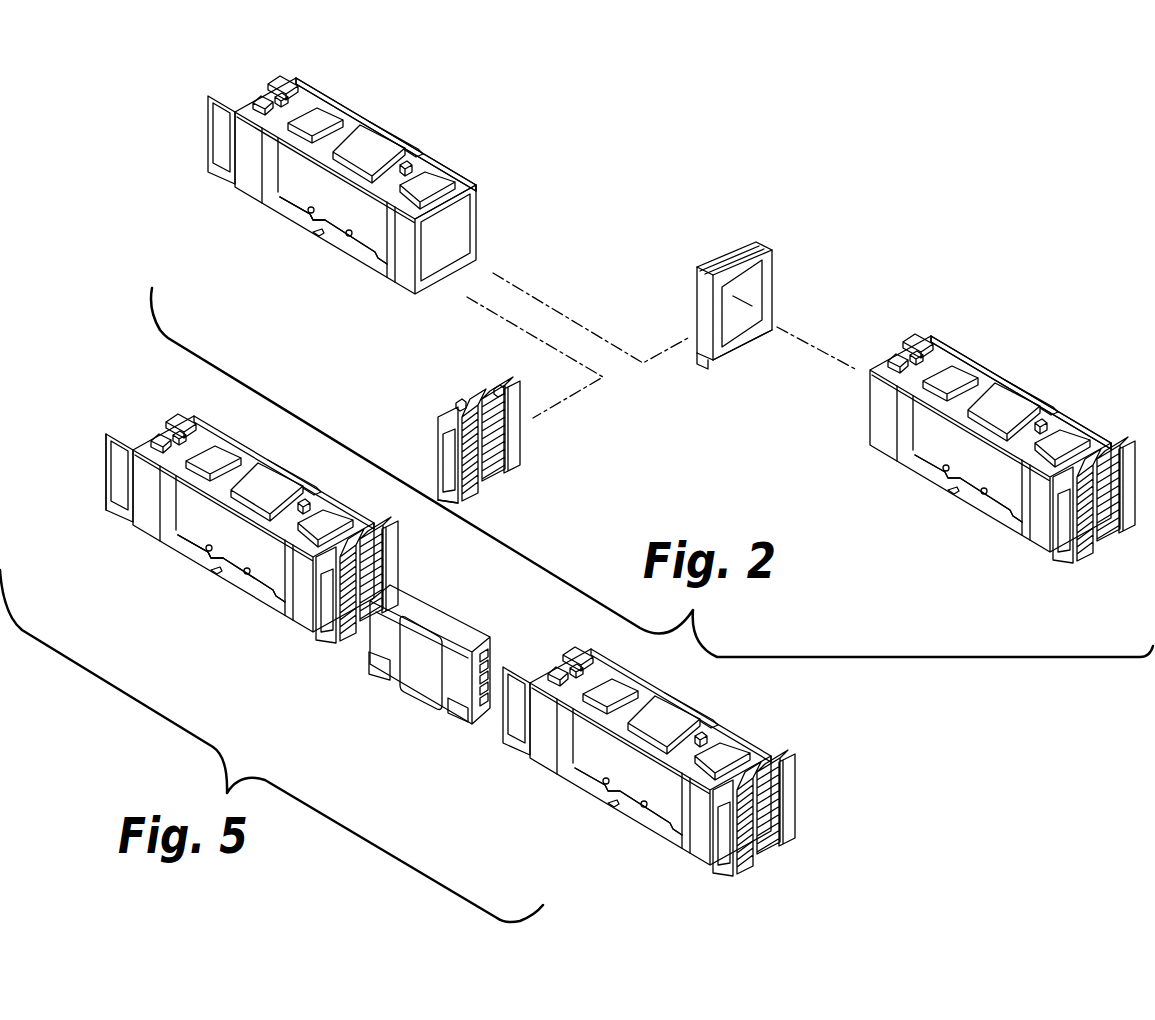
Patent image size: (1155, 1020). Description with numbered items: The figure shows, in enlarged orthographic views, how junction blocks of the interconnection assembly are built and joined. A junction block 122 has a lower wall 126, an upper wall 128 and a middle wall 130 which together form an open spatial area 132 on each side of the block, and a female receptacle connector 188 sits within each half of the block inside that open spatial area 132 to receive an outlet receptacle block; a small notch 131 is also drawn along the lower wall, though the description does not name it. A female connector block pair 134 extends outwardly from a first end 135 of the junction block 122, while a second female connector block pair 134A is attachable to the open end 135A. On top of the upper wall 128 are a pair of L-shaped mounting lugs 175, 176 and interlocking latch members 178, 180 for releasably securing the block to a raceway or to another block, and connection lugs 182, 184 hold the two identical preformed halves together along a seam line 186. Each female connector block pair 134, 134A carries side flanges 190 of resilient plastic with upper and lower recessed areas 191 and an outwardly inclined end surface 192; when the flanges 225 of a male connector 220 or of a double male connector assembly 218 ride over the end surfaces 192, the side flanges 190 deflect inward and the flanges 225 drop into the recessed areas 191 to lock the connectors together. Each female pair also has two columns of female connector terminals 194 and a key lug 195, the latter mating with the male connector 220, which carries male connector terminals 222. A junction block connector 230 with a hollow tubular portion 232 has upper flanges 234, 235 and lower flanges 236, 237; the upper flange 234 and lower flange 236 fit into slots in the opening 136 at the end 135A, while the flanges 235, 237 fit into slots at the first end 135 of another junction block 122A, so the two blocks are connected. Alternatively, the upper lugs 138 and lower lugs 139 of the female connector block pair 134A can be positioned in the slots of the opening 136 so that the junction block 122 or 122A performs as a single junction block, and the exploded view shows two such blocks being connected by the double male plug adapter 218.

In FIG. 2, the junction block 122 is at (332, 173).
In FIG. 5, the junction block 122 is at (205, 575).
In FIG. 2, the junction block 122A is at (987, 443).
In FIG. 5, the junction block 122A is at (645, 756).
In FIG. 2, the lower wall 126 is at (292, 229).
In FIG. 5, the lower wall 126 is at (188, 571).
In FIG. 2, the upper wall 128 is at (242, 181).
In FIG. 5, the upper wall 128 is at (146, 519).
In FIG. 2, the middle wall 130 is at (329, 211).
In FIG. 5, the middle wall 130 is at (228, 549).
In FIG. 2, the notch 131 is at (295, 268).
In FIG. 5, the notch 131 is at (208, 602).
In FIG. 2, the open spatial area 132 is at (297, 200).
In FIG. 5, the open spatial area 132 is at (193, 533).
In FIG. 2, the female connector block pair 134 is at (332, 173).
In FIG. 5, the female connector block pair 134 is at (283, 570).
In FIG. 2, the second female connector block pair 134A is at (510, 500).
In FIG. 5, the second female connector block pair 134A is at (417, 568).
In FIG. 2, the first end 135 is at (290, 78).
In FIG. 2, the open end 135A is at (471, 202).
In FIG. 2, the opening 136 is at (469, 237).
In FIG. 2, the upper lugs 138 is at (487, 424).
In FIG. 2, the lower lugs 139 is at (479, 516).
In FIG. 2, the L-shaped mounting lug 175 is at (337, 113).
In FIG. 2, the L-shaped mounting lug 176 is at (451, 178).
In FIG. 2, the interlocking latch member 178 is at (378, 143).
In FIG. 2, the interlocking latch member 180 is at (399, 139).
In FIG. 2, the connection lug 182 is at (217, 95).
In FIG. 5, the connection lug 182 is at (213, 426).
In FIG. 2, the connection lug 184 is at (441, 147).
In FIG. 5, the connection lug 184 is at (332, 496).
In FIG. 2, the seam line 186 is at (210, 121).
In FIG. 5, the seam line 186 is at (222, 451).
In FIG. 2, the female receptacle connector 188 is at (361, 258).
In FIG. 5, the female receptacle connector 188 is at (265, 605).
In FIG. 2, the side flanges 190 is at (193, 140).
In FIG. 5, the side flanges 190 is at (186, 565).
In FIG. 5, the recessed areas 191 is at (72, 485).
In FIG. 5, the inclined end surface 192 is at (189, 589).
In FIG. 2, the female connector terminals 194 is at (488, 442).
In FIG. 2, the key lug 195 is at (481, 389).
In FIG. 5, the double male connector assembly 218 is at (418, 723).
In FIG. 5, the male connector 220 is at (420, 588).
In FIG. 5, the male connector terminals 222 is at (493, 700).
In FIG. 5, the flanges 225 is at (460, 653).
In FIG. 2, the junction block connector 230 is at (787, 210).
In FIG. 2, the hollow tubular portion 232 is at (770, 288).
In FIG. 2, the upper flange 234 is at (717, 250).
In FIG. 2, the upper flange 235 is at (762, 248).
In FIG. 2, the lower flange 236 is at (693, 357).
In FIG. 2, the lower flange 237 is at (737, 352).